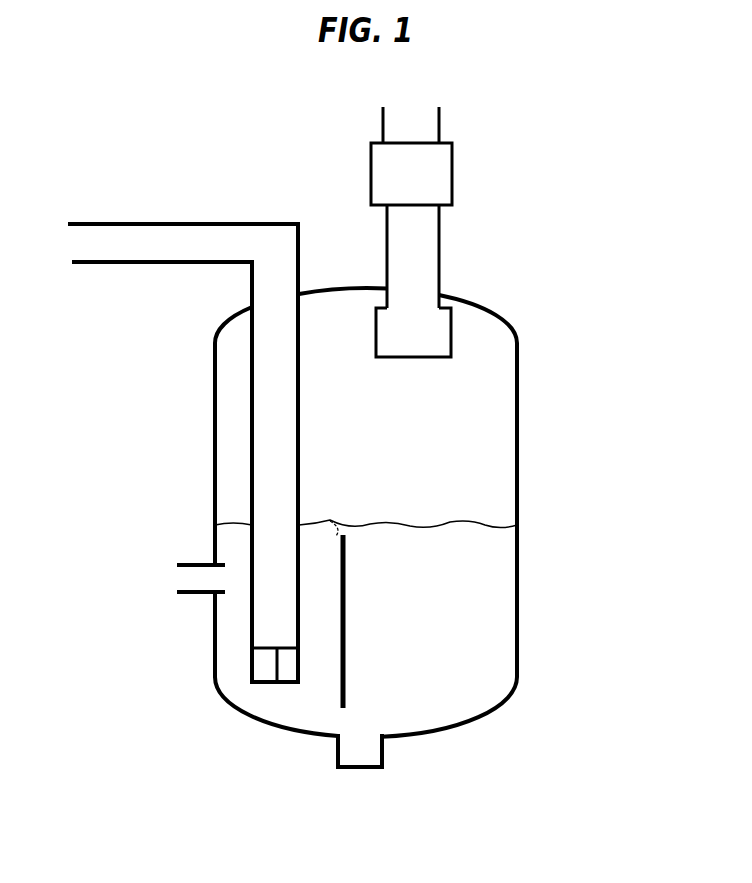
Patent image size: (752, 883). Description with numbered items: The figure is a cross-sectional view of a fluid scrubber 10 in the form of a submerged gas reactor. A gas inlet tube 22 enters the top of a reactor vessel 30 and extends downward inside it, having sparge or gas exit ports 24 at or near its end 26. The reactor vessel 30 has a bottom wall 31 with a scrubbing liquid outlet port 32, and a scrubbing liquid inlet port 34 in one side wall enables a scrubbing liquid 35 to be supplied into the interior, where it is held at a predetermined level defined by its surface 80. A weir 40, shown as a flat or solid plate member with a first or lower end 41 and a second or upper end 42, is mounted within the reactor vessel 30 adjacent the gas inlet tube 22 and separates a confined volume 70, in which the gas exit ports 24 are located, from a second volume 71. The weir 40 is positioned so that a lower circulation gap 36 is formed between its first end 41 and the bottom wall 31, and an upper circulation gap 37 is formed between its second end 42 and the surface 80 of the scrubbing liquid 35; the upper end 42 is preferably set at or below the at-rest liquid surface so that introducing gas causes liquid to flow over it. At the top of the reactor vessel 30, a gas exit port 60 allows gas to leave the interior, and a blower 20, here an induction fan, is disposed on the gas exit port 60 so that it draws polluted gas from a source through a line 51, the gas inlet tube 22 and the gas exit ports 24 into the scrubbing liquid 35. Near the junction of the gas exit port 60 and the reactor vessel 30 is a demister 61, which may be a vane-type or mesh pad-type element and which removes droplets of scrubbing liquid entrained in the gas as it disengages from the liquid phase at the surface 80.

The fluid scrubber 10 is at (190, 493).
The blower 20 is at (437, 168).
The gas inlet tube 22 is at (268, 406).
The gas exit ports 24 is at (252, 669).
The end 26 is at (265, 683).
The reactor vessel 30 is at (518, 357).
The bottom wall 31 is at (440, 730).
The scrubbing liquid outlet port 32 is at (360, 750).
The scrubbing liquid inlet port 34 is at (177, 592).
The scrubbing liquid 35 is at (505, 540).
The lower circulation gap 36 is at (345, 715).
The upper circulation gap 37 is at (332, 520).
The weir 40 is at (348, 645).
The first end 41 is at (345, 712).
The second end 42 is at (350, 533).
The line 51 is at (78, 263).
The gas exit port 60 is at (413, 238).
The demister 61 is at (436, 332).
The confined volume 70 is at (327, 692).
The volume 71 is at (495, 600).
The surface 80 is at (473, 518).